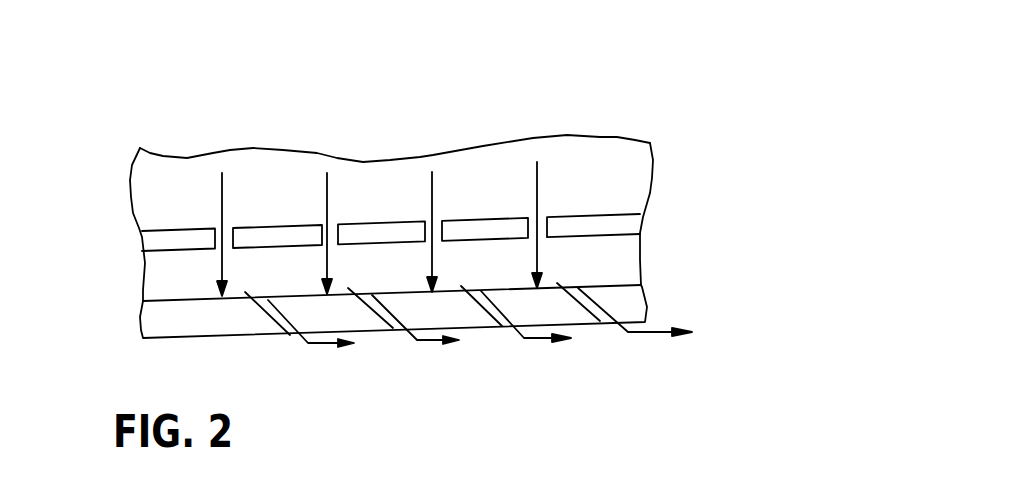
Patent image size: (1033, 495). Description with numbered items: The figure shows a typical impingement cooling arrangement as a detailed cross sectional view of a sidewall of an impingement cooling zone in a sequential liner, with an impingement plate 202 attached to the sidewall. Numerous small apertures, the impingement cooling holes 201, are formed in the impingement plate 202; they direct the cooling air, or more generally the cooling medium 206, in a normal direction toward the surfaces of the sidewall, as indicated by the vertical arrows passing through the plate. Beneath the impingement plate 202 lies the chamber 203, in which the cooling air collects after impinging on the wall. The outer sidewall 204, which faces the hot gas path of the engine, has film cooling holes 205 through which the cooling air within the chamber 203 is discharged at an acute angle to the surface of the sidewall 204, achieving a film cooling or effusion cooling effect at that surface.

The impingement cooling holes 201 is at (530, 217).
The impingement plate 202 is at (625, 220).
The chamber 203 is at (612, 260).
The outer sidewall 204 is at (637, 302).
The film cooling holes 205 is at (595, 308).
The cooling medium 206 is at (538, 173).